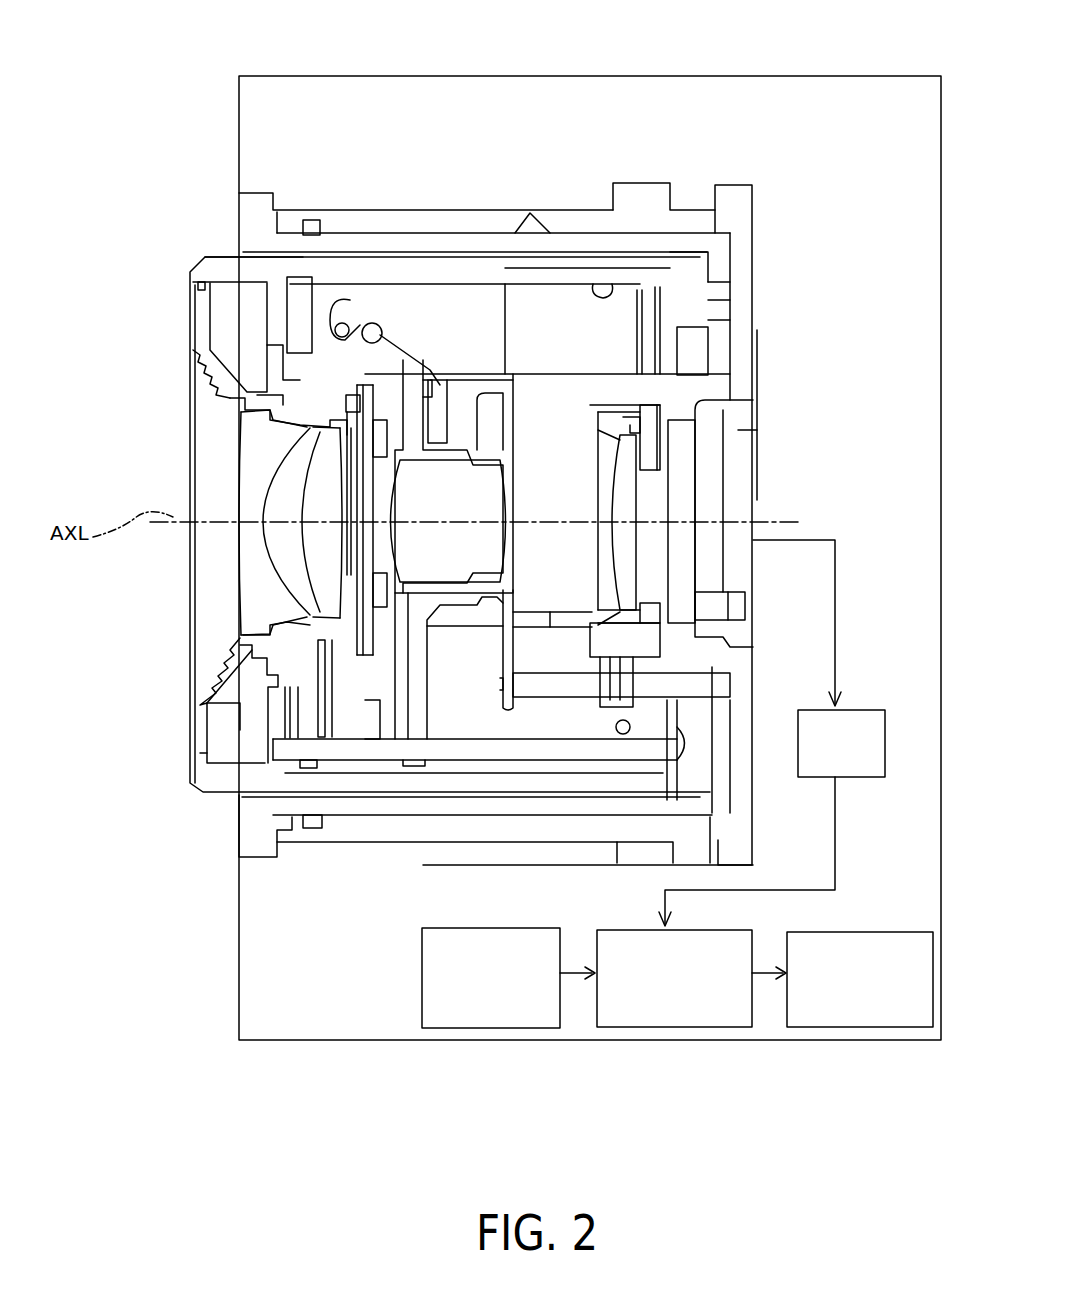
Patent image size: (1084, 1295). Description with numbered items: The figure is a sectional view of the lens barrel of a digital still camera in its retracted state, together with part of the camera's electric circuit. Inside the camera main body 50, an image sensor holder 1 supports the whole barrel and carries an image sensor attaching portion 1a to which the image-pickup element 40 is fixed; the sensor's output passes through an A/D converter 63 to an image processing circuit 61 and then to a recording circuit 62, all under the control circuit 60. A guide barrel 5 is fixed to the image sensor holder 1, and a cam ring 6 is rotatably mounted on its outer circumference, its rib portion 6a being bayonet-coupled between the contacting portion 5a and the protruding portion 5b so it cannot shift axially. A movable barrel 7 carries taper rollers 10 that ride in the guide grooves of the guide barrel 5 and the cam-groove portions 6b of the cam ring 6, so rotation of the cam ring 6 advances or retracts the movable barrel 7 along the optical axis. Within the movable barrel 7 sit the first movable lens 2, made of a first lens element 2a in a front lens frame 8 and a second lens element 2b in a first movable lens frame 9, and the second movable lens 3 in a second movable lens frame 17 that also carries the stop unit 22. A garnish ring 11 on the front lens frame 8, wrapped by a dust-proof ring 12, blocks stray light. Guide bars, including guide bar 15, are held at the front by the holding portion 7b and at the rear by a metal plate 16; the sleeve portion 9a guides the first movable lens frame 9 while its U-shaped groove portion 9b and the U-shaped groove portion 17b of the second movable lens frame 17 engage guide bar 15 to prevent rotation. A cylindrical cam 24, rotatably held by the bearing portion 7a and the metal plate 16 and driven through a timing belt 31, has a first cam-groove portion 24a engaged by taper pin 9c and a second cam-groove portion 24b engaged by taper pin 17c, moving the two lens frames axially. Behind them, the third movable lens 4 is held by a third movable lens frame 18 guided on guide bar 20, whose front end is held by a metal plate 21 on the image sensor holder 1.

The image sensor holder 1 is at (732, 200).
The image sensor attaching portion 1a is at (720, 608).
The first movable lens 2 is at (223, 522).
The first lens element 2a is at (252, 452).
The second lens element 2b is at (297, 495).
The second movable lens 3 is at (385, 538).
The third movable lens 4 is at (623, 488).
The guide barrel 5 is at (256, 217).
The contacting portion 5a is at (273, 838).
The protruding portion 5b is at (312, 830).
The cam ring 6 is at (485, 222).
The rib portion 6a is at (627, 183).
The cam-groove portion 6b is at (517, 228).
The movable barrel 7 is at (427, 783).
The bearing portion 7a is at (305, 307).
The holding portion 7b is at (268, 740).
The front lens frame 8 is at (257, 398).
The first movable lens frame 9 is at (285, 675).
The sleeve portion 9a is at (352, 338).
The taper pin 9c is at (353, 485).
The U-shaped groove portion 9b is at (305, 710).
The taper roller 10 is at (535, 225).
The garnish ring 11 is at (200, 320).
The dust-proof ring 12 is at (203, 282).
The guide bar 15 is at (378, 750).
The metal plate 16 is at (667, 262).
The second movable lens frame 17 is at (432, 440).
The U-shaped groove portion 17b is at (405, 760).
The taper pin 17c is at (365, 293).
The third movable lens frame 18 is at (613, 640).
The guide bar 20 is at (573, 685).
The metal plate 21 is at (500, 710).
The stop unit 22 is at (329, 640).
The cylindrical cam 24 is at (403, 300).
The first cam-groove portion 24a is at (355, 327).
The second cam-groove portion 24b is at (423, 355).
The timing belt 31 is at (648, 328).
The image-pickup element 40 is at (737, 430).
The camera main body 50 is at (578, 76).
The control circuit 60 is at (488, 1030).
The image processing circuit 61 is at (660, 1030).
The recording circuit 62 is at (833, 1030).
The A/D converter 63 is at (862, 710).